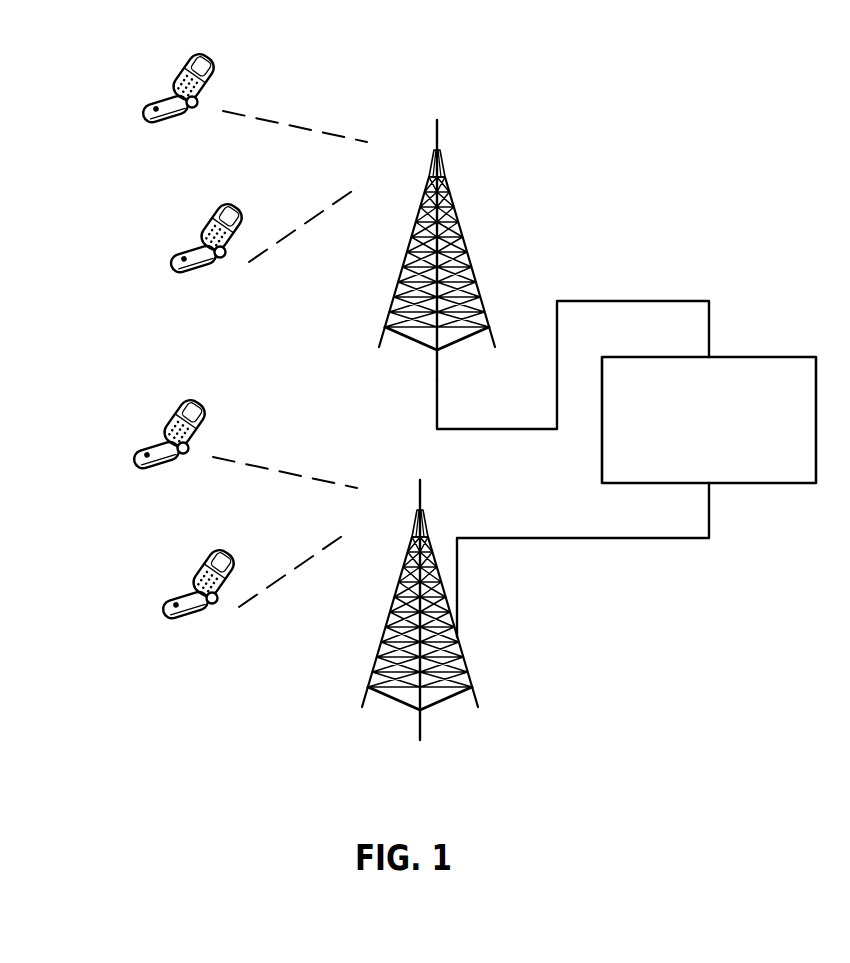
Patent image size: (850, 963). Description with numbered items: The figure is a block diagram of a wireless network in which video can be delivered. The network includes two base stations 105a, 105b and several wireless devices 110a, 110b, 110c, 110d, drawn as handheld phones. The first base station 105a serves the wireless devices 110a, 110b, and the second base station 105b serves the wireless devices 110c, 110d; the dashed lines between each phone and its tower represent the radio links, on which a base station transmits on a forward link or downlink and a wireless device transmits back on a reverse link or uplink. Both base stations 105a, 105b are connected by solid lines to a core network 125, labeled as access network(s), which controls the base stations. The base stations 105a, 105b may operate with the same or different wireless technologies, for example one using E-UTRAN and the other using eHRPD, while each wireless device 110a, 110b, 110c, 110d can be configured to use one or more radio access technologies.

The wireless device 110a is at (163, 60).
The wireless device 110b is at (191, 210).
The wireless device 110c is at (150, 405).
The wireless device 110d is at (180, 555).
The base station 105a is at (452, 204).
The base station 105b is at (431, 529).
The core network 125 is at (613, 357).